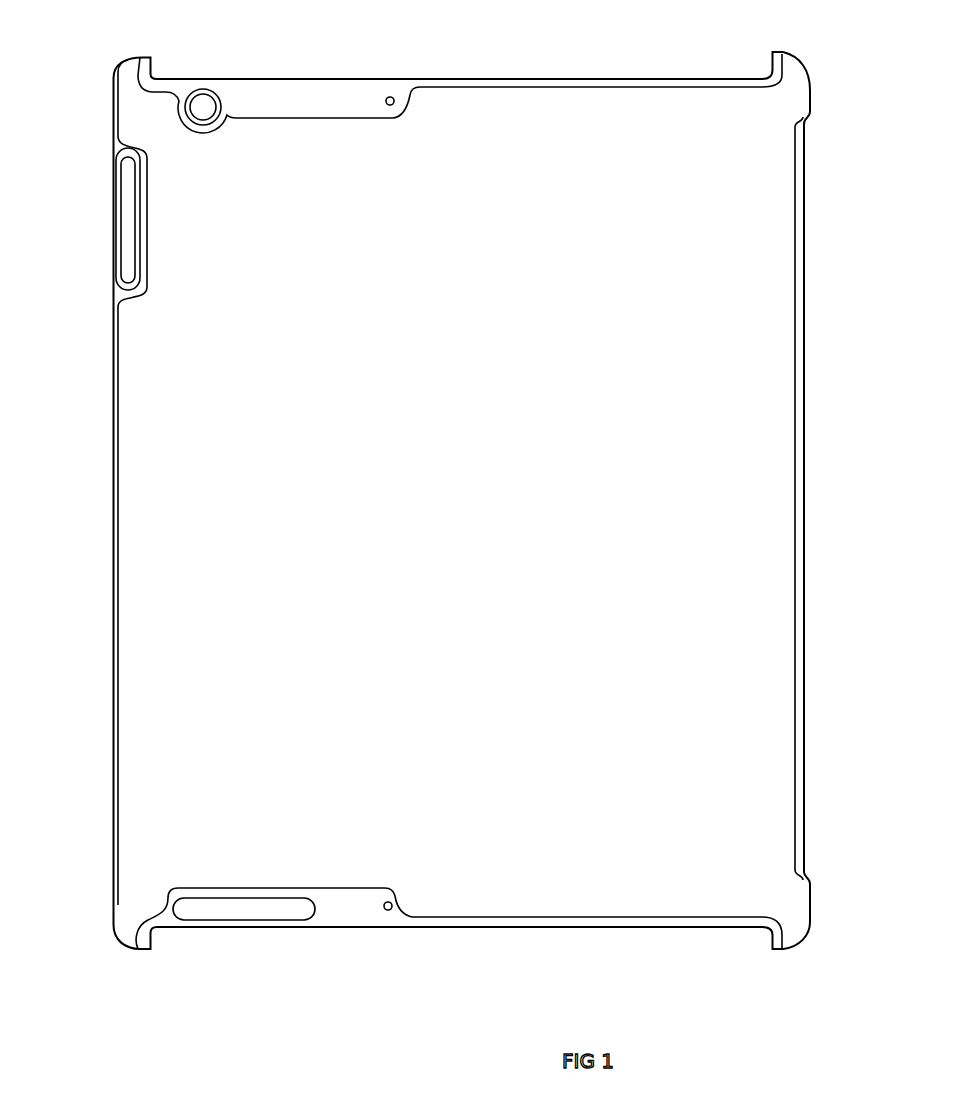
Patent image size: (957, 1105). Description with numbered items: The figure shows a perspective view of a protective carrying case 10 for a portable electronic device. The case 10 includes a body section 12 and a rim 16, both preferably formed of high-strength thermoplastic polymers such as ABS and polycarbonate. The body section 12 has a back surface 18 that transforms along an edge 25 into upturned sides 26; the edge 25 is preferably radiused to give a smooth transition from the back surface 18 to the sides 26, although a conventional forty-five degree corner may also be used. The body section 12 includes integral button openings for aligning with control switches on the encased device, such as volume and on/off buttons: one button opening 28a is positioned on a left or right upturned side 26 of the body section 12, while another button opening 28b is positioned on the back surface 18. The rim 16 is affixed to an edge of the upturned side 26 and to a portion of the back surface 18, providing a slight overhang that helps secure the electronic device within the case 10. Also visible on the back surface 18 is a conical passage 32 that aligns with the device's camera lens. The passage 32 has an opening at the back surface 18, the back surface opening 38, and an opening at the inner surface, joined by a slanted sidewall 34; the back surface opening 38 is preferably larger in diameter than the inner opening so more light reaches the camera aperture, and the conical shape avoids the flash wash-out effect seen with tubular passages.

The protective carrying case 10 is at (815, 282).
The body section 12 is at (461, 855).
The rim 16 is at (499, 83).
The back surface 18 is at (451, 441).
The edge 25 is at (647, 85).
The upturned side 26 is at (120, 107).
The button opening 28a is at (130, 250).
The button opening 28b is at (228, 913).
The conical passage 32 is at (203, 107).
The passage sidewall 34 is at (227, 102).
The back surface opening 38 is at (202, 127).